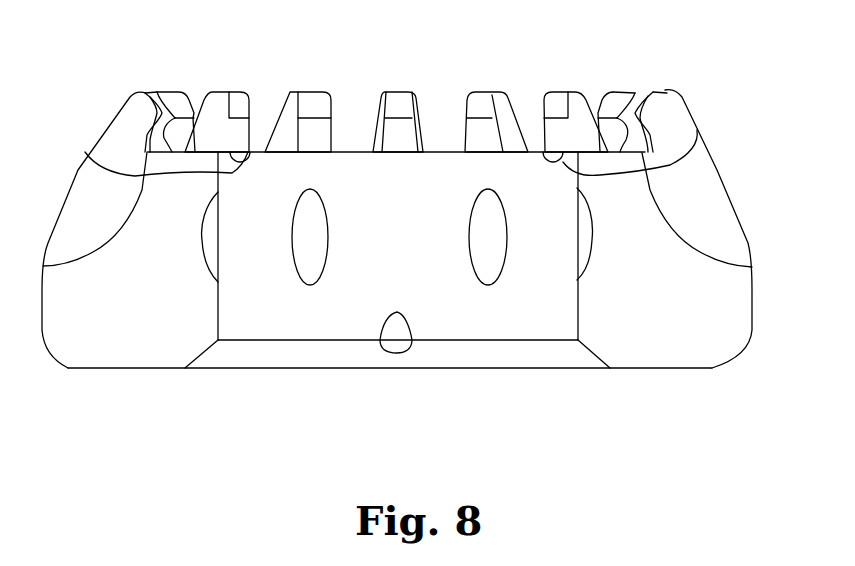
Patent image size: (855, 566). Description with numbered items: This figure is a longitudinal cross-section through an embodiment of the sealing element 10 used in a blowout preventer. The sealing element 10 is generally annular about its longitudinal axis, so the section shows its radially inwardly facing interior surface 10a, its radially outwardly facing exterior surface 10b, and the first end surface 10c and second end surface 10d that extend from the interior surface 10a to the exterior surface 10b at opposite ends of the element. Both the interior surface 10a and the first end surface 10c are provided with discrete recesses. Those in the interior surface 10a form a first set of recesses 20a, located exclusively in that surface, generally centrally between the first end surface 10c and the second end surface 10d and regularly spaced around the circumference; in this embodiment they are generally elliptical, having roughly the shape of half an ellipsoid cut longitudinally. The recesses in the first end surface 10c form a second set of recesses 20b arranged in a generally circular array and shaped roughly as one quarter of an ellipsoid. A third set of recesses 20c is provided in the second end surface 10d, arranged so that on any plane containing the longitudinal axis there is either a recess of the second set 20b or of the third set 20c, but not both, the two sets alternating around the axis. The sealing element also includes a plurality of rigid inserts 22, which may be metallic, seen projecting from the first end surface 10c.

The sealing element 10 is at (742, 186).
The radially inwardly facing interior surface 10a is at (233, 323).
The radially outwardly facing exterior surface 10b is at (753, 300).
The first end surface 10c is at (353, 152).
The second end surface 10d is at (557, 358).
The first set of recesses 20a is at (218, 248).
The second set of recesses 20b is at (85, 152).
The third set of recesses 20c is at (393, 342).
The rigid inserts 22 is at (140, 90).